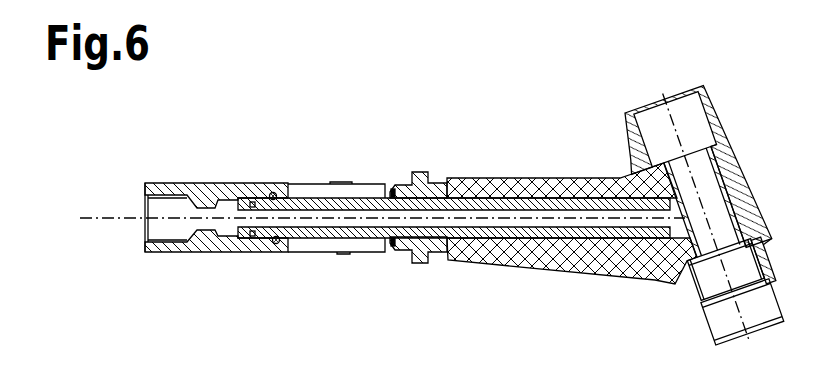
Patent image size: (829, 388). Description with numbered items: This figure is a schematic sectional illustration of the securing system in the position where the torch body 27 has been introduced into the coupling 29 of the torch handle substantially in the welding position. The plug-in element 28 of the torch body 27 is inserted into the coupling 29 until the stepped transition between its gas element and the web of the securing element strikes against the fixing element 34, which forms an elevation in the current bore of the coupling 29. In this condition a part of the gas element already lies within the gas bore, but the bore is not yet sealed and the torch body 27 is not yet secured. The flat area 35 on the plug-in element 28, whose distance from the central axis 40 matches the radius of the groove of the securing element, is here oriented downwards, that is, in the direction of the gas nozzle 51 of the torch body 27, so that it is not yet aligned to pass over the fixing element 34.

The torch body 27 is at (520, 200).
The plug-in element 28 is at (383, 170).
The coupling 29 is at (190, 272).
The fixing element 34 is at (272, 192).
The flat area 35 is at (279, 244).
The central axis 40 is at (88, 211).
The gas nozzle 51 is at (720, 336).